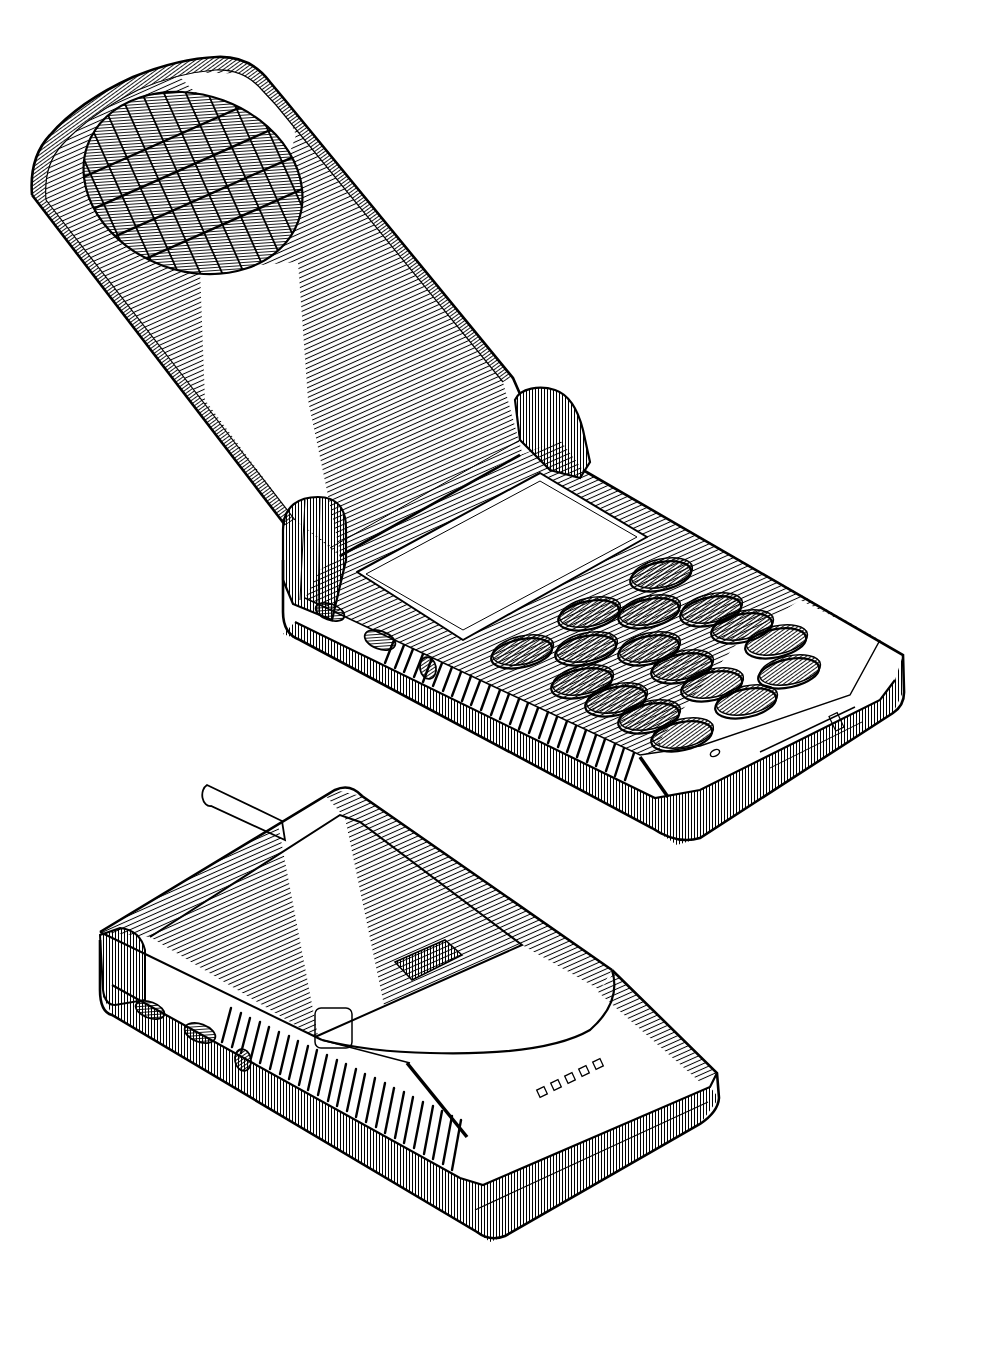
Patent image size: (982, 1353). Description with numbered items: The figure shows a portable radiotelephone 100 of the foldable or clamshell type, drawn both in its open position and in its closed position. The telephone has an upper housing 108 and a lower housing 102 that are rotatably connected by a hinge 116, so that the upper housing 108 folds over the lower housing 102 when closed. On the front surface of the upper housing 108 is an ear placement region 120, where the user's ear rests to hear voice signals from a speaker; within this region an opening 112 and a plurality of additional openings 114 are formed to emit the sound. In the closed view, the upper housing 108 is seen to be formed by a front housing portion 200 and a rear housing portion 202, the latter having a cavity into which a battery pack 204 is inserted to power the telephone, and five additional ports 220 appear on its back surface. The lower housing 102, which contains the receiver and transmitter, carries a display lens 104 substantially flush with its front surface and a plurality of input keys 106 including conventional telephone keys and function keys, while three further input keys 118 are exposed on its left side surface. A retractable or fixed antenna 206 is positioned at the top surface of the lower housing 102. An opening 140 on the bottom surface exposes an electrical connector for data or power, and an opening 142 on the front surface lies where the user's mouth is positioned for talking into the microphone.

In FIG. 1, the portable radiotelephone 100 is at (668, 250).
In FIG. 2, the portable radiotelephone 100 is at (839, 977).
In FIG. 1, the lower housing 102 is at (785, 582).
In FIG. 2, the lower housing 102 is at (481, 1091).
In FIG. 1, the display lens 104 is at (563, 510).
In FIG. 1, the input keys 106 is at (677, 575).
In FIG. 1, the upper housing 108 is at (400, 216).
In FIG. 2, the upper housing 108 is at (438, 892).
In FIG. 1, the opening 112 is at (217, 190).
In FIG. 1, the additional openings 114 is at (195, 167).
In FIG. 1, the hinge 116 is at (148, 115).
In FIG. 1, the input keys 118 is at (372, 660).
In FIG. 2, the input keys 118 is at (193, 1034).
In FIG. 1, the ear placement region 120 is at (195, 163).
In FIG. 1, the opening 140 is at (857, 727).
In FIG. 1, the opening 142 is at (720, 756).
In FIG. 2, the front housing portion 200 is at (643, 990).
In FIG. 2, the rear housing portion 202 is at (560, 938).
In FIG. 2, the battery pack 204 is at (407, 840).
In FIG. 2, the antenna 206 is at (243, 783).
In FIG. 2, the additional ports 220 is at (612, 1070).